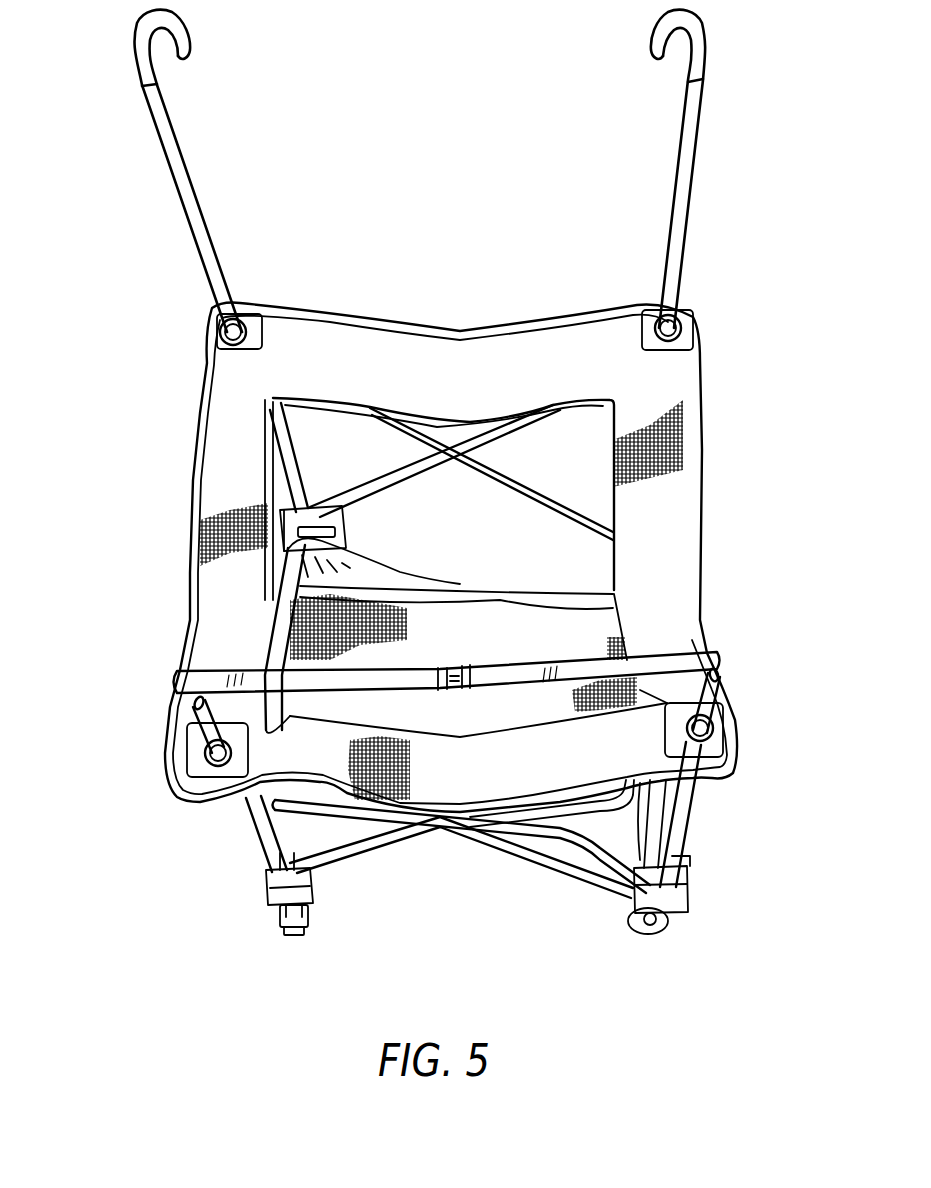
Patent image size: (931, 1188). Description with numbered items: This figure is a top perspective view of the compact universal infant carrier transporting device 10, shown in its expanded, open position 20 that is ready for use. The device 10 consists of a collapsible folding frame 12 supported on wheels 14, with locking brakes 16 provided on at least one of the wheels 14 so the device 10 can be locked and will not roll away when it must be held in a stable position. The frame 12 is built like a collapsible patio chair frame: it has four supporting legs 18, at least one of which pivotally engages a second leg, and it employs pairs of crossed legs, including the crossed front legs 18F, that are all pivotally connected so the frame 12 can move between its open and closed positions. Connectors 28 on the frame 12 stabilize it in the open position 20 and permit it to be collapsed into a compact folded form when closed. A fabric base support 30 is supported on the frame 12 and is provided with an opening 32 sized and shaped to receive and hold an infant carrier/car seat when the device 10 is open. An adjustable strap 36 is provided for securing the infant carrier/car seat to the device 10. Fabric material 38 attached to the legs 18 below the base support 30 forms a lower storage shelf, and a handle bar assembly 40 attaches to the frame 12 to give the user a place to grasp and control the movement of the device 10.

The compact universal infant carrier transporting device 10 is at (499, 130).
The collapsible folding frame 12 is at (495, 838).
The wheels 14 is at (293, 937).
The locking brakes 16 is at (277, 913).
The supporting legs 18 is at (257, 830).
The front legs 18F is at (387, 840).
The expanded, open position 20 is at (554, 271).
The connectors 28 is at (227, 335).
The fabric base support 30 is at (668, 537).
The opening 32 is at (303, 405).
The adjustable strap 36 is at (672, 657).
The fabric material 38 is at (490, 623).
The handle bar assembly 40 is at (178, 172).